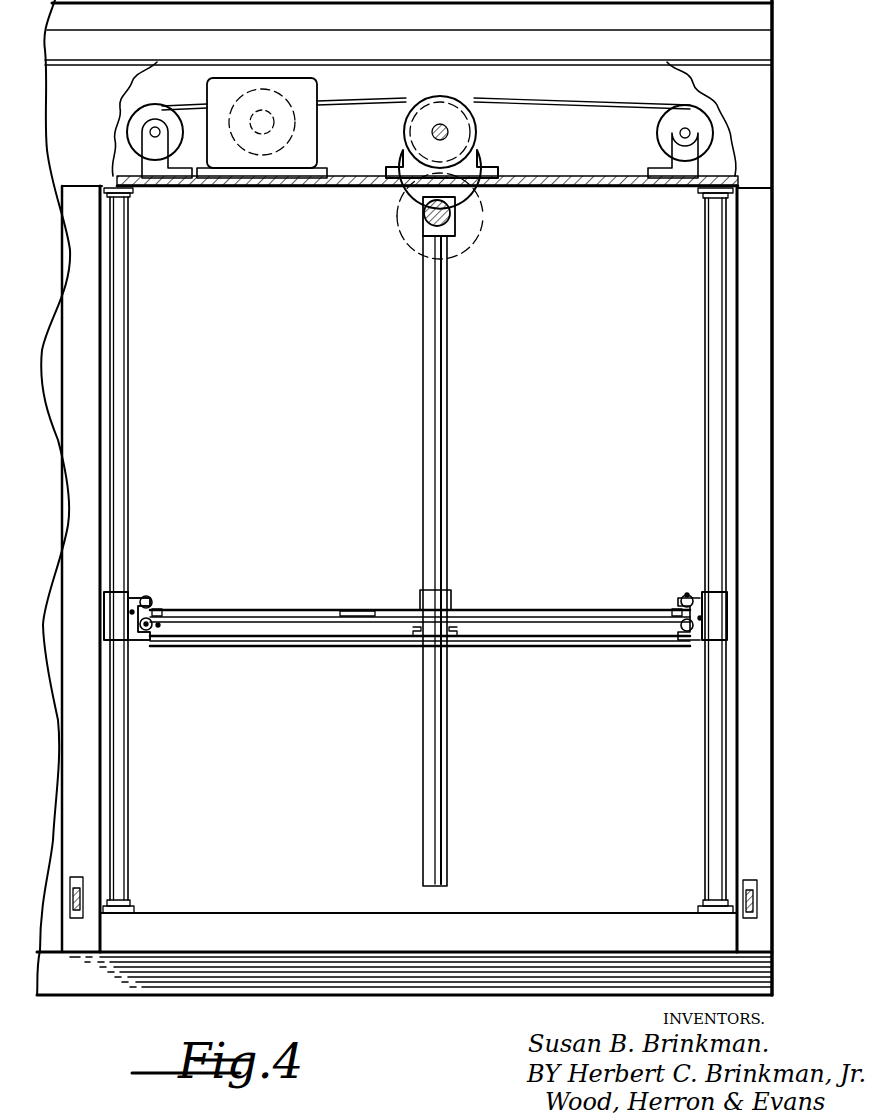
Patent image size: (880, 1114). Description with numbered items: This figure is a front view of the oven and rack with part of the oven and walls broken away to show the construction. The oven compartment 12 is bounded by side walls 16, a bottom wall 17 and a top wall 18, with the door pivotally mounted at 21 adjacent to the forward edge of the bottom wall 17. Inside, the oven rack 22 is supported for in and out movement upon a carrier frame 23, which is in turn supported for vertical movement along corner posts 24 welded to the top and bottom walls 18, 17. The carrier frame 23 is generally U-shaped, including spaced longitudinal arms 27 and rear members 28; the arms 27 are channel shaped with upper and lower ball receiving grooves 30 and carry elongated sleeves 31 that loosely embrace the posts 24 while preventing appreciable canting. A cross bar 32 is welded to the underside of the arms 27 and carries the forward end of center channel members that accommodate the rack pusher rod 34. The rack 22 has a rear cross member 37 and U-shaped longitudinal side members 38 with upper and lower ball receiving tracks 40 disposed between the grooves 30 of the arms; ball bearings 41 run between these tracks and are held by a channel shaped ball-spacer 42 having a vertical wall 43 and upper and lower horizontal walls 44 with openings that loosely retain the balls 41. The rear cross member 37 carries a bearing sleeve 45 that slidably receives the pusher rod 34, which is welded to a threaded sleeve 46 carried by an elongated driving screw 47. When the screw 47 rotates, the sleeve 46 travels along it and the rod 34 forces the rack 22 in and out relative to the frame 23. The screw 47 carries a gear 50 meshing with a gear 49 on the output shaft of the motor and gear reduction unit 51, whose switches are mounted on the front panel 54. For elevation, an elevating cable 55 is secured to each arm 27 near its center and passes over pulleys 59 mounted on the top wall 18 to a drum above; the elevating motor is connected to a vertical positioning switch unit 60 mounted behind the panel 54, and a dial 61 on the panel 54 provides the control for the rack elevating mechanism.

The oven compartment 12 is at (418, 854).
The side walls 16 is at (766, 444).
The bottom wall 17 is at (224, 912).
The top wall 18 is at (594, 190).
The pivot 21 is at (72, 897).
The oven rack 22 is at (314, 606).
The carrier frame 23 is at (162, 600).
The corner posts 24 is at (718, 294).
The longitudinal arms 27 is at (140, 596).
The rear members 28 is at (516, 626).
The ball receiving grooves 30 is at (150, 597).
The sleeves 31 is at (115, 623).
The cross bar 32 is at (545, 647).
The rack pusher rod 34 is at (446, 430).
The rear cross member 37 is at (272, 610).
The longitudinal side members 38 is at (162, 612).
The ball receiving tracks 40 is at (160, 626).
The ball bearings 41 is at (688, 594).
The ball-spacer 42 is at (702, 619).
The vertical wall 43 is at (132, 612).
The horizontal walls 44 is at (150, 635).
The bearing sleeve 45 is at (452, 601).
The threaded sleeve 46 is at (428, 228).
The driving screw 47 is at (452, 211).
The gear 49 is at (462, 99).
The gear 50 is at (397, 210).
The motor and gear reduction unit 51 is at (484, 143).
The front panel 54 is at (132, 76).
The elevating cable 55 is at (138, 300).
The pulleys 59 is at (136, 132).
The vertical positioning switch unit 60 is at (290, 82).
The dial 61 is at (296, 140).